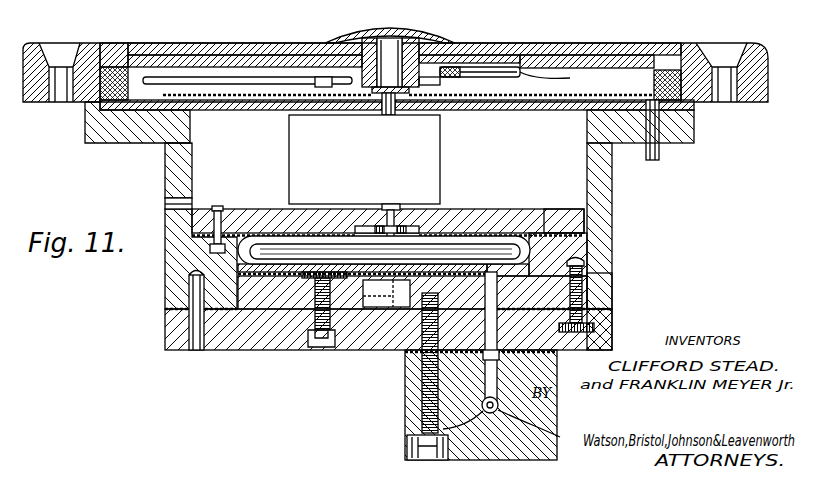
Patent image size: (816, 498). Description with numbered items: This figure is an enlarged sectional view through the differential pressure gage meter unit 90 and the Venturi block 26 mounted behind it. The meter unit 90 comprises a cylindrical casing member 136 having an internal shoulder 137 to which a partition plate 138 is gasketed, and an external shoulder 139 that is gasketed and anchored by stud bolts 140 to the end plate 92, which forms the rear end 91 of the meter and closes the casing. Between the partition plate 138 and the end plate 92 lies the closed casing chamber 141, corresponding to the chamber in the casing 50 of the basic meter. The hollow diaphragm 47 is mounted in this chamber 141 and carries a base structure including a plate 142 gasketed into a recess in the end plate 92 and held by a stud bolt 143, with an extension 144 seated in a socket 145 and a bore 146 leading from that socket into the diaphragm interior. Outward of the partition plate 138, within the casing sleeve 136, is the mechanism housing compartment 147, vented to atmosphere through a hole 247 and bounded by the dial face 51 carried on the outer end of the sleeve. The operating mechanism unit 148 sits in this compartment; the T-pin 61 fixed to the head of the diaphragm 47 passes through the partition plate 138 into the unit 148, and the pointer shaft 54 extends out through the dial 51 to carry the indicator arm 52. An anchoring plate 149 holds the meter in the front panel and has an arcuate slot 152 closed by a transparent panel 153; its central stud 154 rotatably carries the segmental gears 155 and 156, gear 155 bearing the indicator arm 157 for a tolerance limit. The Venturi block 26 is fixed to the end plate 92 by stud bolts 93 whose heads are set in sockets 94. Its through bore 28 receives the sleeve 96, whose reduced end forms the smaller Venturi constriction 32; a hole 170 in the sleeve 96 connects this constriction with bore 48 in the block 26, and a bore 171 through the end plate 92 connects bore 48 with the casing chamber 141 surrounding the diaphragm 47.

The Venturi block 26 is at (406, 391).
The through bore 28 is at (481, 408).
The smaller Venturi constriction 32 is at (412, 436).
The hollow diaphragm 47 is at (530, 247).
The bore 48 is at (488, 360).
The casing 50 is at (586, 216).
The dial face 51 is at (133, 107).
The indicator arm 52 is at (182, 95).
The pointer shaft 54 is at (392, 105).
The T-pin 61 is at (398, 204).
The differential pressure gage meter unit 90 is at (651, 43).
The rear end 91 is at (612, 348).
The end plate 92 is at (167, 338).
The stud bolts 93 is at (412, 455).
The socket 94 is at (412, 441).
The sleeve 96 is at (540, 428).
The cylindrical casing member 136 is at (612, 188).
The internal shoulder 137 is at (574, 229).
The partition plate 138 is at (547, 207).
The external shoulder 139 is at (612, 313).
The stud bolts 140 is at (582, 278).
The casing chamber 141 is at (240, 270).
The plate 142 is at (270, 346).
The stud bolt 143 is at (310, 335).
The extension 144 is at (347, 342).
The socket 145 is at (378, 340).
The bore 146 is at (393, 298).
The mechanism housing compartment 147 is at (166, 199).
The operating mechanism unit 148 is at (443, 138).
The anchoring plate 149 is at (757, 100).
The arcuate slot 152 is at (130, 50).
The transparent panel 153 is at (198, 60).
The central stud 154 is at (421, 47).
The segmental gear 155 is at (511, 80).
The segmental gear 156 is at (556, 77).
The indicator arm 157 is at (238, 76).
The hole 170 is at (486, 398).
The bore 171 is at (498, 304).
The hole 247 is at (166, 206).